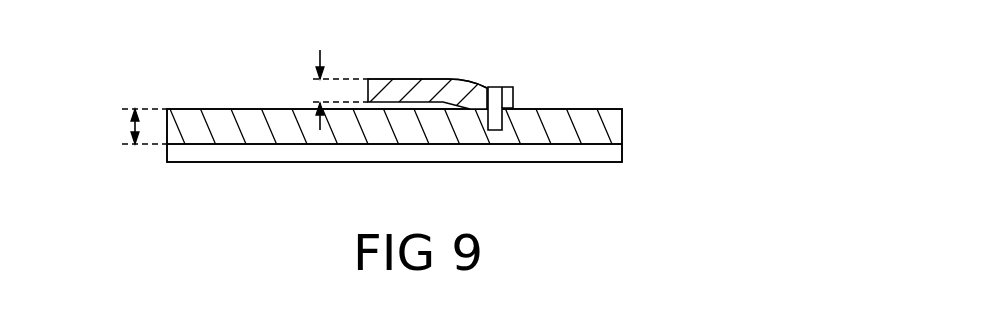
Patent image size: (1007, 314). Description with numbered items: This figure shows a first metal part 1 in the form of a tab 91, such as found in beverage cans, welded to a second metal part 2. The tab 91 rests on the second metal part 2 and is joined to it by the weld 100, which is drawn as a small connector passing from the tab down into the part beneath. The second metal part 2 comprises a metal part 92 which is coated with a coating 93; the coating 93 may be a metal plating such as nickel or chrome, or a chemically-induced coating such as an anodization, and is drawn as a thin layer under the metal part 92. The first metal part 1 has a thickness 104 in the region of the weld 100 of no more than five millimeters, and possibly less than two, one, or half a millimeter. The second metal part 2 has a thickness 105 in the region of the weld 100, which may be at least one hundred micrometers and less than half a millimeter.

The first metal part 1 is at (430, 78).
The second metal part 2 is at (213, 108).
The tab 91 is at (453, 76).
The metal part 92 is at (623, 123).
The coating 93 is at (623, 152).
The weld 100 is at (497, 86).
The thickness 104 is at (319, 64).
The thickness 105 is at (130, 127).